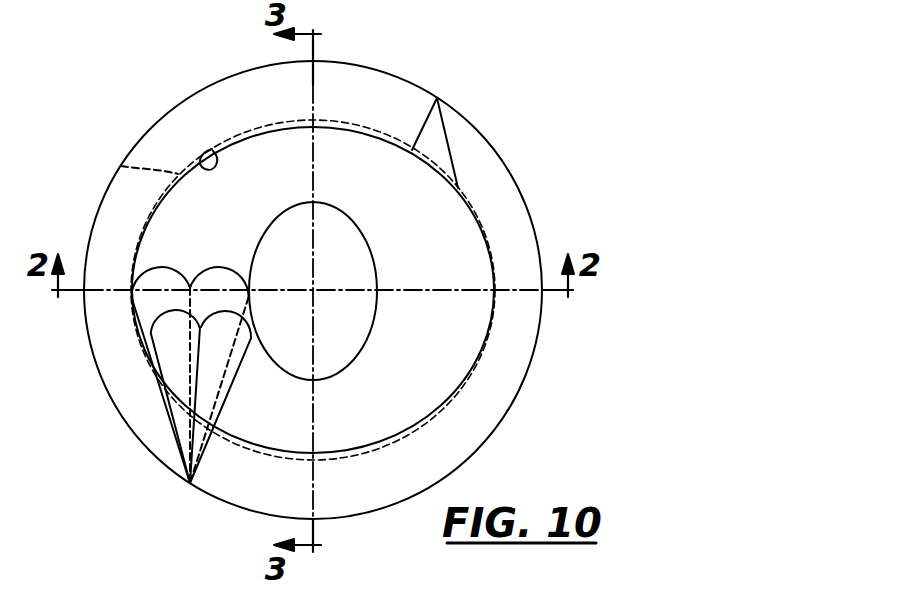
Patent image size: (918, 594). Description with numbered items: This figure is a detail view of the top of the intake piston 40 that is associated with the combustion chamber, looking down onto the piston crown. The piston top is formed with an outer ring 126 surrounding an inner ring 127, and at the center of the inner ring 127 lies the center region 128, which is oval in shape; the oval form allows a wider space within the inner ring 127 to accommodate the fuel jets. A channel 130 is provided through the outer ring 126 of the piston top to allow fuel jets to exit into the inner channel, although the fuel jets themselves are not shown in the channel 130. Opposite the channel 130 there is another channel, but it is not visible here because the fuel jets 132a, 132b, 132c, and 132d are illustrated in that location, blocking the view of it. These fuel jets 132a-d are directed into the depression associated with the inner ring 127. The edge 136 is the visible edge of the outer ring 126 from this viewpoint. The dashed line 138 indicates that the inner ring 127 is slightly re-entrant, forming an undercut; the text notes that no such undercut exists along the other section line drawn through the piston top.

The intake piston 40 is at (540, 368).
The outer ring 126 is at (517, 216).
The inner ring 127 is at (469, 278).
The center region 128 is at (340, 330).
The channel 130 is at (440, 148).
The fuel jet 132a is at (182, 290).
The fuel jet 132b is at (195, 290).
The fuel jet 132c is at (153, 345).
The fuel jet 132d is at (250, 345).
The edge 136 is at (213, 151).
The dashed line 138 is at (121, 166).